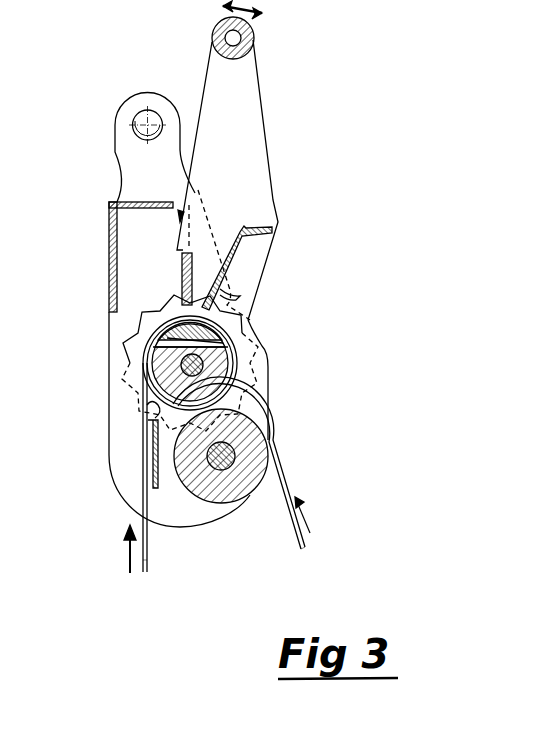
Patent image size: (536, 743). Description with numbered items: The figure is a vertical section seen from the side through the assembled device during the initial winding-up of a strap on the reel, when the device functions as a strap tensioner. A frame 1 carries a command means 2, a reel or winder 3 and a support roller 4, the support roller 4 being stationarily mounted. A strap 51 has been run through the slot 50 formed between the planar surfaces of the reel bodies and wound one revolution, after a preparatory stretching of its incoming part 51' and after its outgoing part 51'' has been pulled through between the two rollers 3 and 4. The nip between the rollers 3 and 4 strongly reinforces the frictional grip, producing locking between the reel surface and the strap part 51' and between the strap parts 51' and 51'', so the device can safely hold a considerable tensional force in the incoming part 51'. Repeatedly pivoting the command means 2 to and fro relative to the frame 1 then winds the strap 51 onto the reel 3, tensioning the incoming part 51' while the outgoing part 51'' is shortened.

The frame 1 is at (108, 265).
The command means 2 is at (274, 114).
The reel 3 is at (235, 365).
The support roller 4 is at (228, 490).
The slot 50 is at (162, 314).
The strap 51 is at (183, 444).
The incoming part 51' is at (158, 554).
The outgoing part 51'' is at (284, 537).